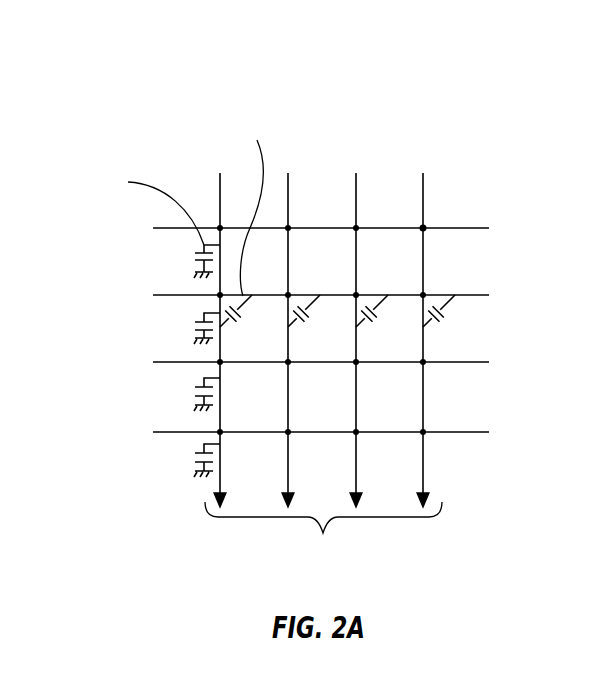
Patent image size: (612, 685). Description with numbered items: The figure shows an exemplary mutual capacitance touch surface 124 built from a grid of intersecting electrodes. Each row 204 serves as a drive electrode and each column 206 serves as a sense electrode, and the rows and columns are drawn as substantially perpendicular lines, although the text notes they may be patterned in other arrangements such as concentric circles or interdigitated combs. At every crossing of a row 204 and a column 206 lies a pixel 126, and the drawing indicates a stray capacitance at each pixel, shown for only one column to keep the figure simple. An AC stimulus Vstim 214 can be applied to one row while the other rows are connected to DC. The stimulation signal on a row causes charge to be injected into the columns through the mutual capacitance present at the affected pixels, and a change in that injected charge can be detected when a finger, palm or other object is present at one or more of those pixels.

The mutual capacitance touch surface 124 is at (137, 53).
The pixel 126 is at (423, 228).
The row 204 is at (462, 228).
The column 206 is at (423, 332).
The AC stimuli Vstim 214 is at (287, 308).